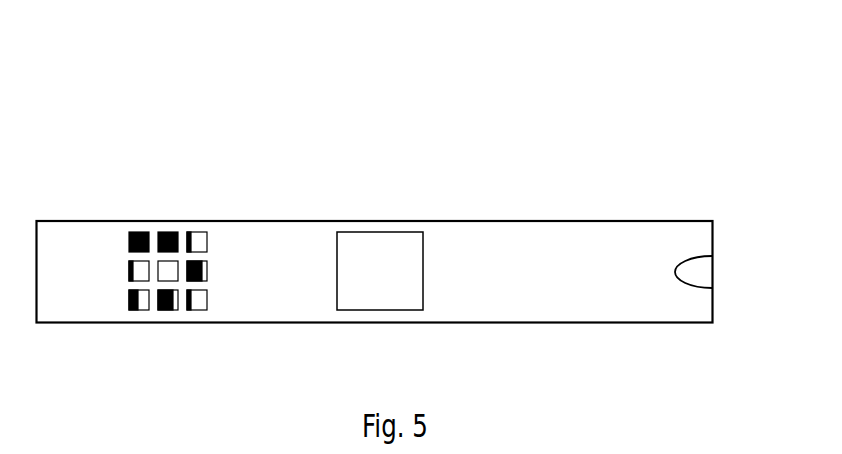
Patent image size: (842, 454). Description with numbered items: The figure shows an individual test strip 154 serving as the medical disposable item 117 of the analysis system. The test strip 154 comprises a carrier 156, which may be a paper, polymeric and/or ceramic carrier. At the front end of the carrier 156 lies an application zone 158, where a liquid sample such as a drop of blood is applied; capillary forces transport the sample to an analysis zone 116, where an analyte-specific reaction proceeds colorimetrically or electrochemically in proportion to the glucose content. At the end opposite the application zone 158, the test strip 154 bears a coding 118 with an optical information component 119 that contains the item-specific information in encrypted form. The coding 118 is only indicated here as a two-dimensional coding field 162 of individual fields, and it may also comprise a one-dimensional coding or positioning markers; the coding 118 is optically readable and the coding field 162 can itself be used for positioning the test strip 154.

The test strip 154 is at (376, 177).
The medical disposable item 117 is at (376, 177).
The carrier 156 is at (568, 164).
The analysis zone 116 is at (403, 284).
The coding 118 is at (226, 219).
The optical information component 119 is at (226, 219).
The coding field 162 is at (162, 213).
The application zone 158 is at (702, 273).